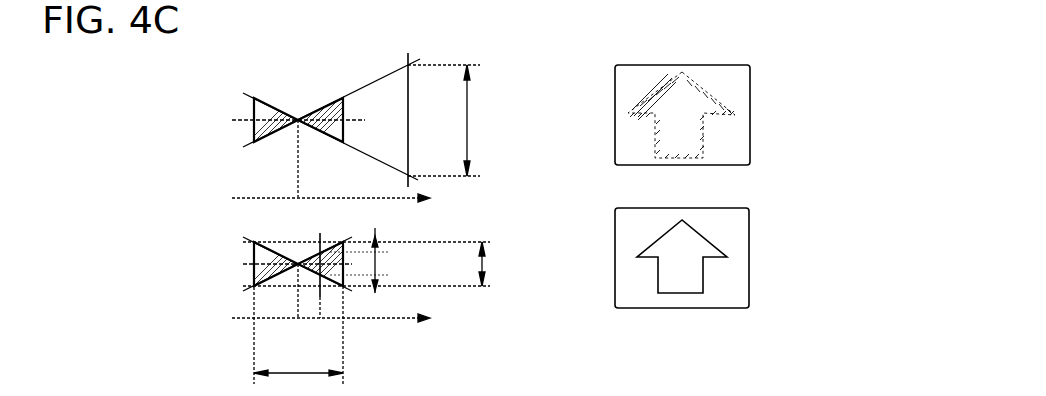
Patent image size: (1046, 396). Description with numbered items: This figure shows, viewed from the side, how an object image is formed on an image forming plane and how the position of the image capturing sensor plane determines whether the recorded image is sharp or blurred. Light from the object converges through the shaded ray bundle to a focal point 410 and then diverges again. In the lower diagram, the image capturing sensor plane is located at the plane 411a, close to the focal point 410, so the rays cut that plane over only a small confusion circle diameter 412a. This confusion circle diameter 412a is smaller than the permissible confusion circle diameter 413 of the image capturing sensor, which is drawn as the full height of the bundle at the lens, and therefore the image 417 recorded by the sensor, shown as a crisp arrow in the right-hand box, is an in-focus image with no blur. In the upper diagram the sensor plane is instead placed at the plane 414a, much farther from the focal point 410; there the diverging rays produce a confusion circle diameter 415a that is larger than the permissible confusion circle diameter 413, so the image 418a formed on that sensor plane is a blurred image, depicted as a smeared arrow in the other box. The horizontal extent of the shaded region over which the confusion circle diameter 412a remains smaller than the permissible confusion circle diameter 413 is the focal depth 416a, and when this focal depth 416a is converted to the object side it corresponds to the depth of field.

The focal point 410 is at (299, 246).
The plane 411a is at (320, 236).
The confusion circle diameter 412a is at (380, 262).
The permissible confusion circle diameter 413 is at (486, 262).
The plane 414a is at (407, 58).
The confusion circle diameter 415a is at (475, 122).
The focal depth 416a is at (299, 371).
The image 417 is at (702, 232).
The image 418a is at (706, 91).